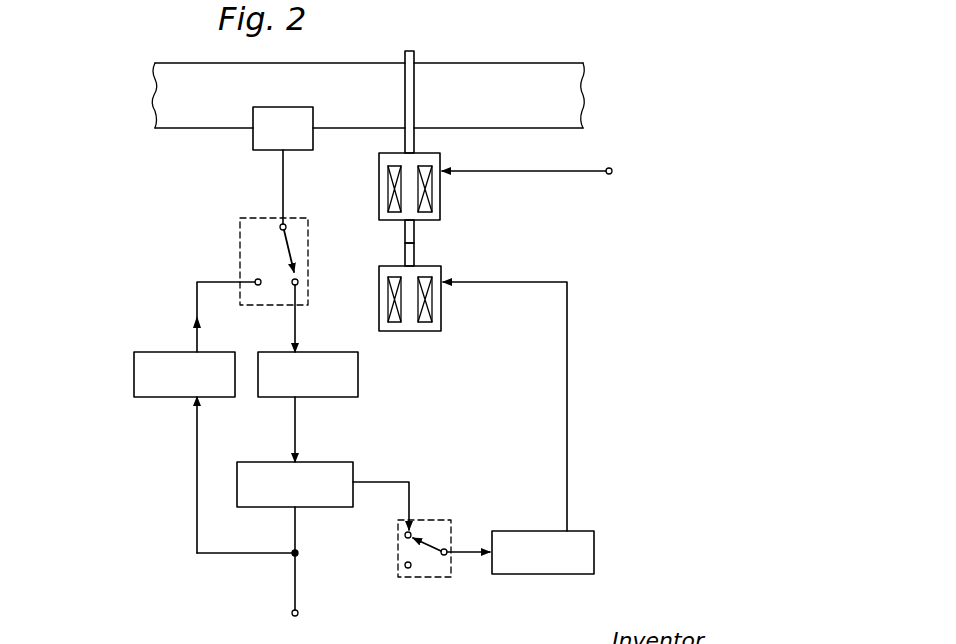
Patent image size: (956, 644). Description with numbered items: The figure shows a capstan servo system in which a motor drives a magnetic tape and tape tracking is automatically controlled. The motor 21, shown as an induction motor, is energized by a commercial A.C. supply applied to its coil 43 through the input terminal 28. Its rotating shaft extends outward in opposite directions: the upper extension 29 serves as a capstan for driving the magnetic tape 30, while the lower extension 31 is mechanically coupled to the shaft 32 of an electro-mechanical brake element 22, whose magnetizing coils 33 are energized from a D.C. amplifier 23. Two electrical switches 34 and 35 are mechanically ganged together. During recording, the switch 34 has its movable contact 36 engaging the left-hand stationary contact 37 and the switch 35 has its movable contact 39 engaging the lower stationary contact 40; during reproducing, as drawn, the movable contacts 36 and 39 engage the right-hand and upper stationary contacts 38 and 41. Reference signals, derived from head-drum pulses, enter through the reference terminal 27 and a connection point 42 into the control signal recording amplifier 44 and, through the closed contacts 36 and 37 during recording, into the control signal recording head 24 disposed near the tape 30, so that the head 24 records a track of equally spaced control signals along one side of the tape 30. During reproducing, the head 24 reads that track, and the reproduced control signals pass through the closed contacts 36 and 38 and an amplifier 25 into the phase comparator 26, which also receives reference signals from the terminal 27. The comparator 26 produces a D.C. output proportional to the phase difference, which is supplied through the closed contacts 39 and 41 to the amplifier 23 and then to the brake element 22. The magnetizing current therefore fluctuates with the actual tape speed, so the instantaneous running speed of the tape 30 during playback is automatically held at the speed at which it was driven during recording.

The motor 21 is at (405, 178).
The electro-mechanical brake element 22 is at (413, 316).
The D.C. amplifier 23 is at (545, 574).
The control signal recording head 24 is at (251, 136).
The amplifier 25 is at (358, 385).
The phase comparator 26 is at (347, 469).
The reference terminal 27 is at (303, 613).
The input terminal 28 is at (611, 167).
The upper extension 29 is at (415, 52).
The magnetic tape 30 is at (373, 66).
The lower extension 31 is at (414, 230).
The shaft 32 is at (414, 253).
The magnetizing coils 33 is at (425, 320).
The switch 34 is at (275, 261).
The switch 35 is at (412, 553).
The movable contact 36 is at (273, 241).
The left-hand stationary contact 37 is at (255, 279).
The right-hand stationary contact 38 is at (299, 282).
The movable contact 39 is at (443, 556).
The lower stationary contact 40 is at (405, 567).
The upper stationary contact 41 is at (412, 530).
The connection point 42 is at (303, 553).
The coil 43 is at (388, 185).
The control signal recording amplifier 44 is at (145, 397).